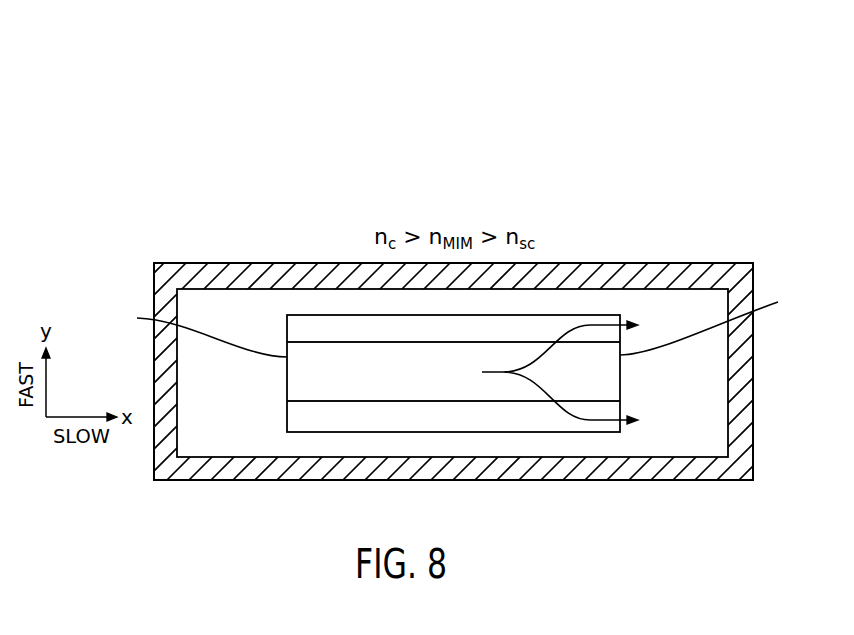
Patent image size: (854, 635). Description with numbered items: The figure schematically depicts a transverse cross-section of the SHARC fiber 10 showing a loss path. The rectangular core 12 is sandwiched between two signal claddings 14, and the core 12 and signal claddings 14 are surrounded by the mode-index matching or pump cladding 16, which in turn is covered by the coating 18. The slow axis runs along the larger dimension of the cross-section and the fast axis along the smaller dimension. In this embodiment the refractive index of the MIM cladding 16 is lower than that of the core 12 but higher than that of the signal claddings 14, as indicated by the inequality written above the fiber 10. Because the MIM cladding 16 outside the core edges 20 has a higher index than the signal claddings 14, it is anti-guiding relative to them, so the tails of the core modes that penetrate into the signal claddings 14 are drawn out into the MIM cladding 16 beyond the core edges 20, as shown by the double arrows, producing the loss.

The SHARC fiber 10 is at (656, 200).
The core 12 is at (518, 357).
The signal claddings 14 is at (353, 322).
The MIM cladding 16 is at (238, 303).
The coating 18 is at (243, 477).
The core edges 20 is at (459, 358).